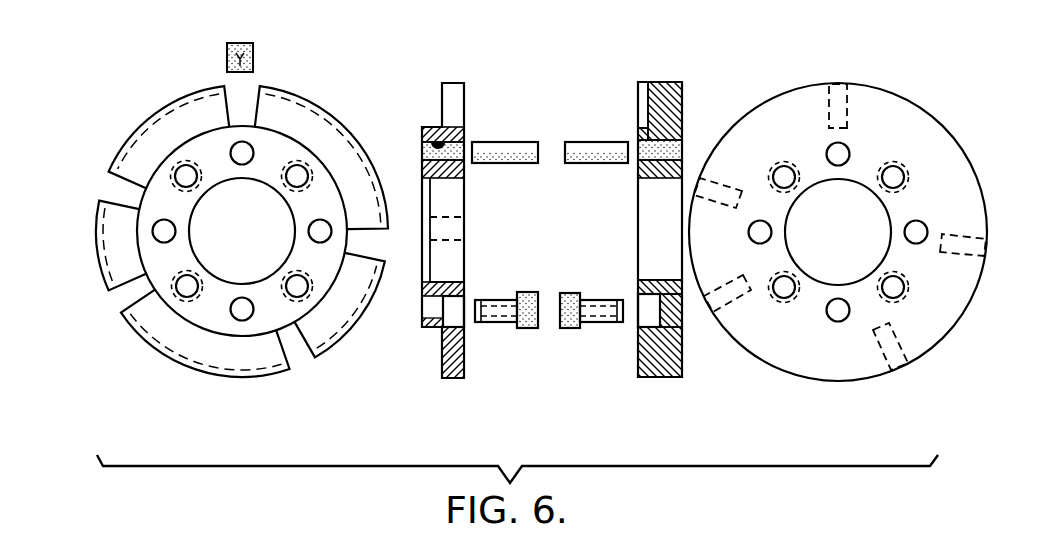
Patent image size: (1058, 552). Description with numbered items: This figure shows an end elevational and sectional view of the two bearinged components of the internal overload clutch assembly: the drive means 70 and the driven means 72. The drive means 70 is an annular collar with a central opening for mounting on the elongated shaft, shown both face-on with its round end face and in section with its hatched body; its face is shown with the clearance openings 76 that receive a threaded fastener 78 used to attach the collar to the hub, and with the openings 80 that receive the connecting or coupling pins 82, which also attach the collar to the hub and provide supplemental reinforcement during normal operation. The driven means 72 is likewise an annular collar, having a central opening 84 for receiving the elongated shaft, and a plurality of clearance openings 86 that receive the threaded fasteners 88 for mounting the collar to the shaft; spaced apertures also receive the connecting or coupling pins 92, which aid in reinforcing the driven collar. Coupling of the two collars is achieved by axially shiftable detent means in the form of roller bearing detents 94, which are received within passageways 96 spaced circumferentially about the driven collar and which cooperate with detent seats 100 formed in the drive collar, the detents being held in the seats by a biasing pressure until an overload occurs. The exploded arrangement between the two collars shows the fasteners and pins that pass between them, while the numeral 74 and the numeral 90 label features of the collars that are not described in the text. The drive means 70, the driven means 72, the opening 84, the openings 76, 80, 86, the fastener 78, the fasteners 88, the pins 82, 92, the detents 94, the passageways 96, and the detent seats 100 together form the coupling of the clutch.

The drive means 70 is at (672, 77).
The driven means 72 is at (288, 223).
The central opening of disc 70 74 is at (884, 218).
The clearance openings 76 is at (662, 316).
The threaded fastener 78 is at (600, 297).
The openings 80 is at (675, 148).
The connecting or coupling pins 82 is at (603, 140).
The central opening 84 is at (220, 194).
The clearance openings 86 is at (172, 173).
The threaded fasteners 88 is at (490, 300).
The holes in disc 72 90 is at (244, 314).
The connecting or coupling pins 92 is at (484, 140).
The roller bearing detents 94 is at (235, 58).
The passageways 96 is at (298, 355).
The detent seats 100 is at (917, 360).